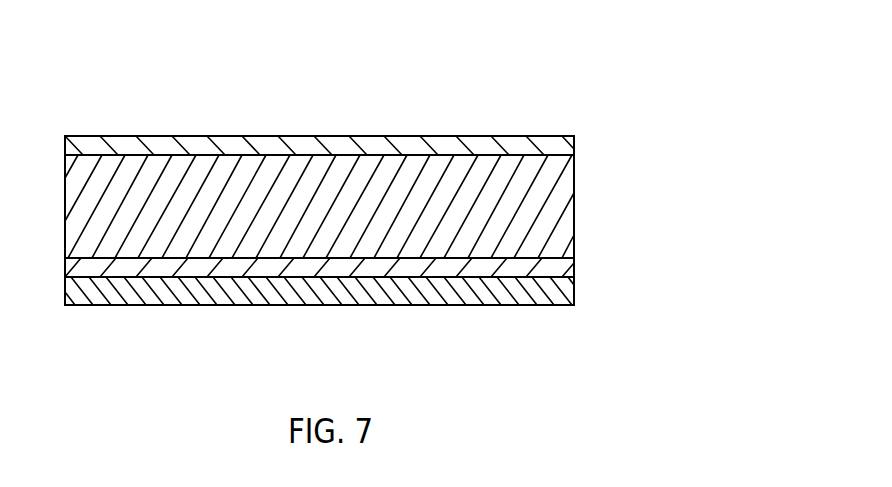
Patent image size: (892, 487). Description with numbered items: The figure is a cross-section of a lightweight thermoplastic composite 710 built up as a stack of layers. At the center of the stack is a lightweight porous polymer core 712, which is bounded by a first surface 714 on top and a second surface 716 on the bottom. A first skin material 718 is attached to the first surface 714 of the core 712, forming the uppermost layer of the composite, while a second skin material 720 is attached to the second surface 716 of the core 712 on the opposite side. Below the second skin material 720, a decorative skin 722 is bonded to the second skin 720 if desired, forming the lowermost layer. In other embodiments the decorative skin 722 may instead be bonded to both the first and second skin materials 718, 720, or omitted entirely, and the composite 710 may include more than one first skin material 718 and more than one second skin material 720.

The lightweight composite 710 is at (674, 135).
The lightweight porous polymer core 712 is at (574, 216).
The first surface 714 is at (557, 157).
The second surface 716 is at (530, 258).
The first skin material 718 is at (528, 136).
The second skin material 720 is at (540, 268).
The decorative skin 722 is at (547, 305).